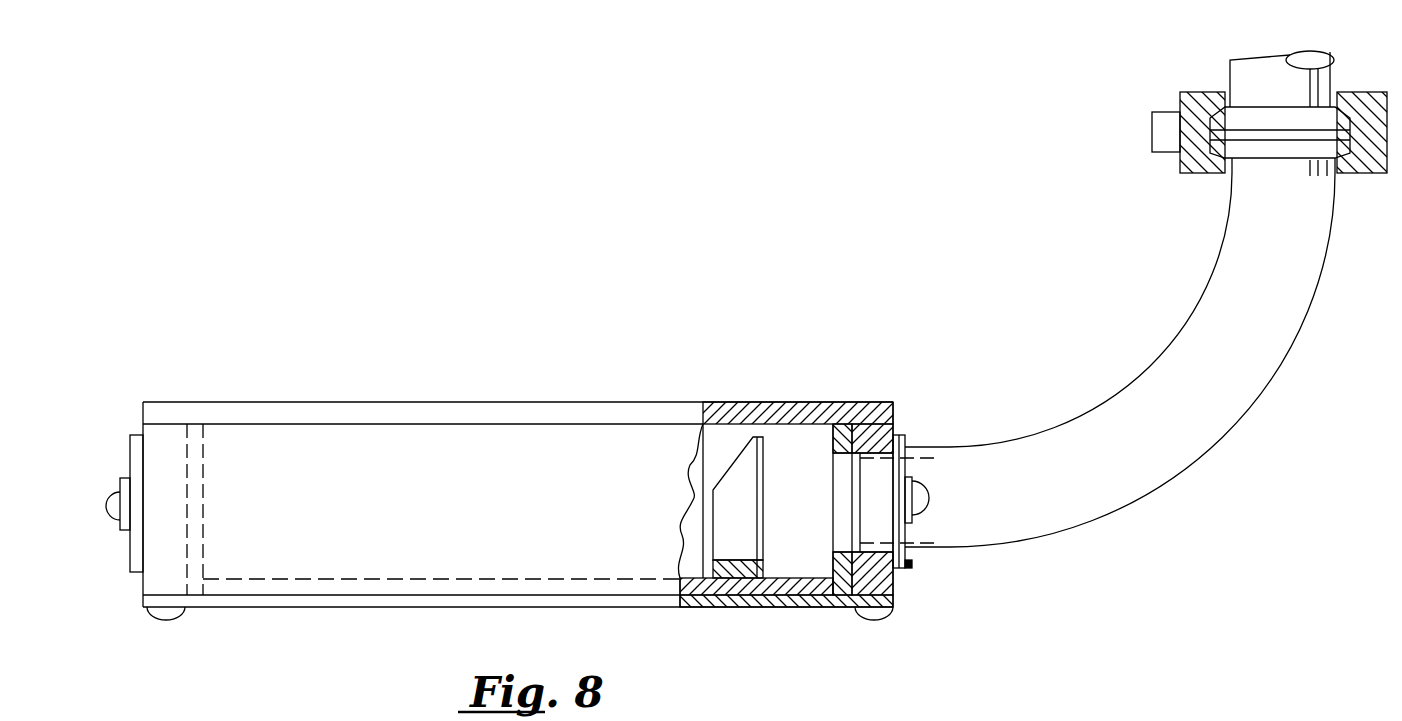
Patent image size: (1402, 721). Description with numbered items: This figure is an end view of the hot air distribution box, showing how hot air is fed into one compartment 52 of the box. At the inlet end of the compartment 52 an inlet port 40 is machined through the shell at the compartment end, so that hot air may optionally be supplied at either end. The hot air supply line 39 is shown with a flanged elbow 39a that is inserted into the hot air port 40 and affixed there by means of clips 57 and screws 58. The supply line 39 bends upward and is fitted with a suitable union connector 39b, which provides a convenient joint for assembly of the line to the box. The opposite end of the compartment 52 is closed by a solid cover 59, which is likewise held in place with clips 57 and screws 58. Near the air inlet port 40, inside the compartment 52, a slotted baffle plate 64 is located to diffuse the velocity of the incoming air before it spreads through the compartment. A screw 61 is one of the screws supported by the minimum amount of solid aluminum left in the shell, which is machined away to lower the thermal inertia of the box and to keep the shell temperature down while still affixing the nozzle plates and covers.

The hot air supply line 39 is at (1229, 74).
The flanged elbow 39a is at (1037, 404).
The union connector 39b is at (1178, 98).
The inlet port 40 is at (847, 552).
The compartment 52 is at (797, 457).
The clip 57 is at (128, 532).
The screw 58 is at (104, 507).
The solid cover 59 is at (138, 575).
The screw 61 is at (520, 637).
The slotted baffle plate 64 is at (713, 503).